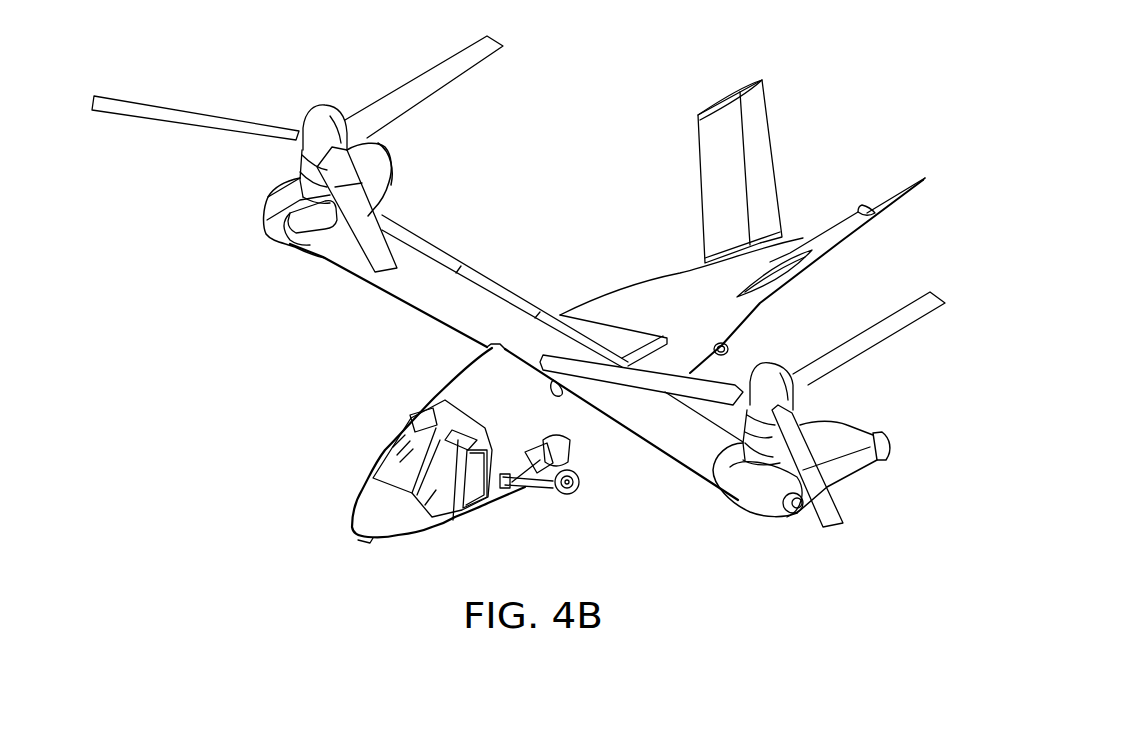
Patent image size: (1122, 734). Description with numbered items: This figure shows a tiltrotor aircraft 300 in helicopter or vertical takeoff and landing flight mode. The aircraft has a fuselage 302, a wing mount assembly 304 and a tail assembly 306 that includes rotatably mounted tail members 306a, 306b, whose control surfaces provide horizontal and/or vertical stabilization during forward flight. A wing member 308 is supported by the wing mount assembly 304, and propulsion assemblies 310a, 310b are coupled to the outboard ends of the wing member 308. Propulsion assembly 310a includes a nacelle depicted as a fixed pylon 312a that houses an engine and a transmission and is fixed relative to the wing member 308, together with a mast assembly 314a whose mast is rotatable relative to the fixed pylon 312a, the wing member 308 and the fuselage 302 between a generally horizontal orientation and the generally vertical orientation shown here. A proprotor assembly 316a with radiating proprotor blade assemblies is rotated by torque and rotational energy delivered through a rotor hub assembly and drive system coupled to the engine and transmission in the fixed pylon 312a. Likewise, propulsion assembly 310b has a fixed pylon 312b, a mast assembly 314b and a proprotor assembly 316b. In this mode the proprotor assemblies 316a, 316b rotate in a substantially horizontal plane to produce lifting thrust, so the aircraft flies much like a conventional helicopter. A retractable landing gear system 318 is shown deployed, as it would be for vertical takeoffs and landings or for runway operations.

The tiltrotor aircraft 300 is at (592, 124).
The fuselage 302 is at (598, 447).
The wing mount assembly 304 is at (607, 313).
The tail assembly 306 is at (847, 220).
The tail member 306a is at (923, 180).
The tail member 306b is at (767, 97).
The wing member 308 is at (430, 280).
The propulsion assembly 310a is at (885, 470).
The propulsion assembly 310b is at (268, 188).
The fixed pylon 312a is at (860, 487).
The fixed pylon 312b is at (393, 178).
The mast assembly 314a is at (728, 477).
The mast assembly 314b is at (297, 158).
The proprotor assembly 316a is at (773, 363).
The proprotor assembly 316b is at (327, 105).
The retractable landing gear system 318 is at (538, 508).